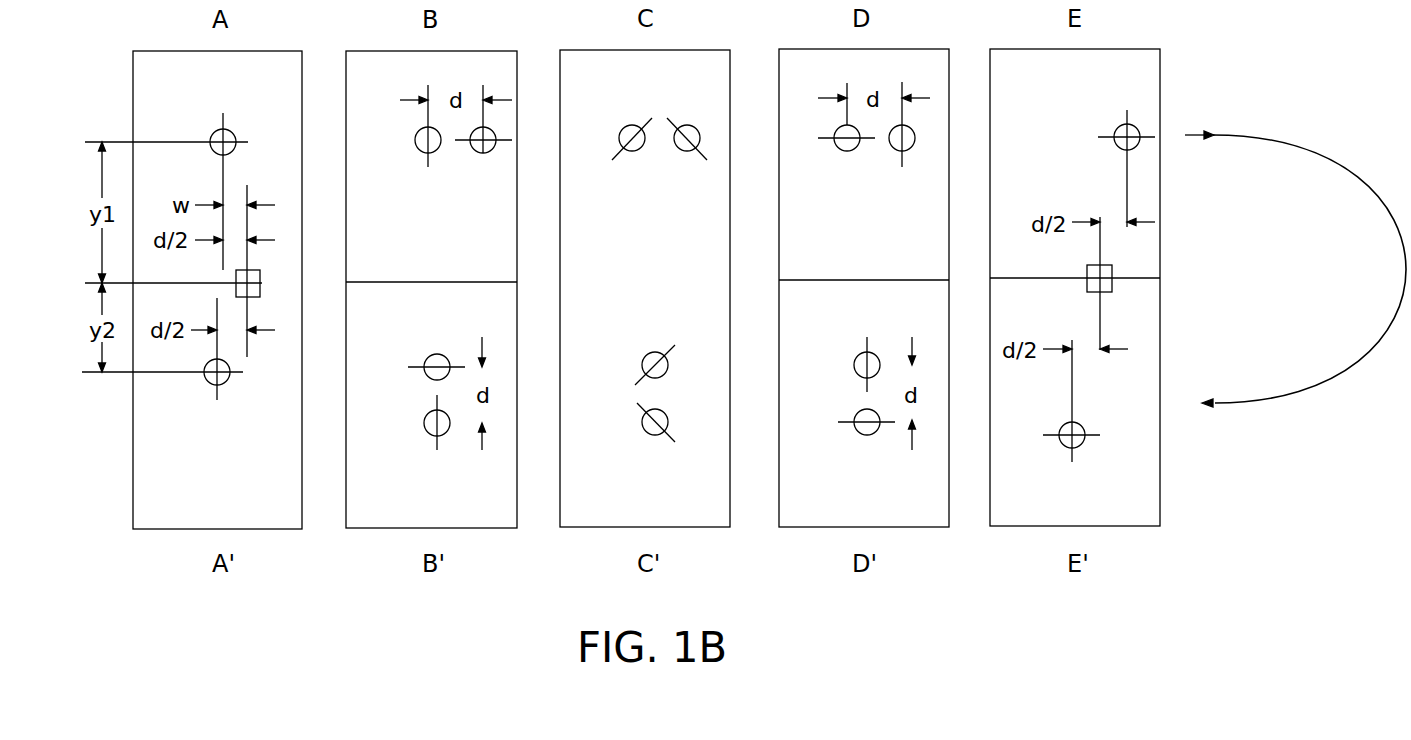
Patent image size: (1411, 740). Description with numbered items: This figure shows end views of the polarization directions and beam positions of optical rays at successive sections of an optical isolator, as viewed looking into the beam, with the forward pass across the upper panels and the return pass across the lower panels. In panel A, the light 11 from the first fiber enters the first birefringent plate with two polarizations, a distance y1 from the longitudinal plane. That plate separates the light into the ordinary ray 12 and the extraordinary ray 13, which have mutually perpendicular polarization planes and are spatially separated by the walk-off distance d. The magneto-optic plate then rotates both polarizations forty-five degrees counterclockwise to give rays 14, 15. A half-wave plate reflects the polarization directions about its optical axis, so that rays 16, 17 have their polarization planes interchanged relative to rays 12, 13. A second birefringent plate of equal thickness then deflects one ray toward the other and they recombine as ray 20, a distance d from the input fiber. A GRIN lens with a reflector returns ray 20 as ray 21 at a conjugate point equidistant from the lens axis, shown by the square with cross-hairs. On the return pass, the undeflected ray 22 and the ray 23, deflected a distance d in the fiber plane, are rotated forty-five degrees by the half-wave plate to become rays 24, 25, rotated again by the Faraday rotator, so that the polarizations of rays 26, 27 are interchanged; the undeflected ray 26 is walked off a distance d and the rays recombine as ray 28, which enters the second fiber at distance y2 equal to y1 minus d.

The incident light beam 11 is at (228, 128).
The recombined output ray 28 is at (221, 384).
The ordinary ray 12 is at (417, 135).
The extraordinary ray 13 is at (487, 152).
The deflected ray of second stage 27 is at (430, 355).
The undeflected ray 26 is at (432, 435).
The rotated ray 14 is at (620, 137).
The rotated ray 15 is at (688, 152).
The second-stage rotated ray 24 is at (648, 353).
The second-stage rotated ray 25 is at (648, 433).
The ray with interchanged polarization 16 is at (837, 135).
The ray with interchanged polarization 17 is at (903, 152).
The deflected second-stage ray 23 is at (858, 355).
The undeflected second-stage ray 22 is at (862, 433).
The recombined ray 20 is at (1118, 127).
The reflected ray 21 is at (1077, 422).